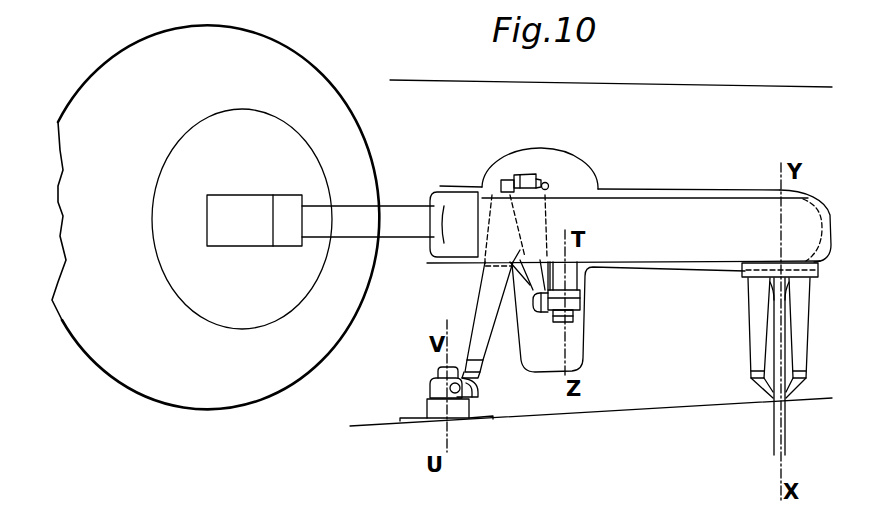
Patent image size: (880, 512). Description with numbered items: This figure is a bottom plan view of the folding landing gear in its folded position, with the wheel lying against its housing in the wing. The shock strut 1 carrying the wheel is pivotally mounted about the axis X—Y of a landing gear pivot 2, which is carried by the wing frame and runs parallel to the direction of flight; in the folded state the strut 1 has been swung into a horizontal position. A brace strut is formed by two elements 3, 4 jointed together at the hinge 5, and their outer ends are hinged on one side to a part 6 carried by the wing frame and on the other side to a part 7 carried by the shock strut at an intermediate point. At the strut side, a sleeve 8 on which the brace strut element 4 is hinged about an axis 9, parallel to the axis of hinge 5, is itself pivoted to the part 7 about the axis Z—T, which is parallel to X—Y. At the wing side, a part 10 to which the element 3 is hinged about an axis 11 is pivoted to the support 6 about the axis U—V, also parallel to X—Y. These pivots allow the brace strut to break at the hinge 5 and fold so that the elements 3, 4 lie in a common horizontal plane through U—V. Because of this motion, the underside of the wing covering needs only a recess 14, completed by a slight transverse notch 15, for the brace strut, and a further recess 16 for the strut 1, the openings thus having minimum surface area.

The shock strut 1 is at (680, 210).
The landing gear pivot 2 is at (775, 315).
The brace strut element 3 is at (487, 292).
The brace strut element 4 is at (540, 266).
The joint 5 is at (549, 188).
The part carried by the wing frame 6 is at (427, 409).
The part carried by the shock strut 7 is at (575, 283).
The sleeve 8 is at (581, 303).
The axis 9 is at (538, 313).
The part 10 is at (433, 389).
The axis 11 is at (478, 387).
The recess 14 is at (585, 356).
The notch 15 is at (565, 153).
The recess 16 is at (632, 190).